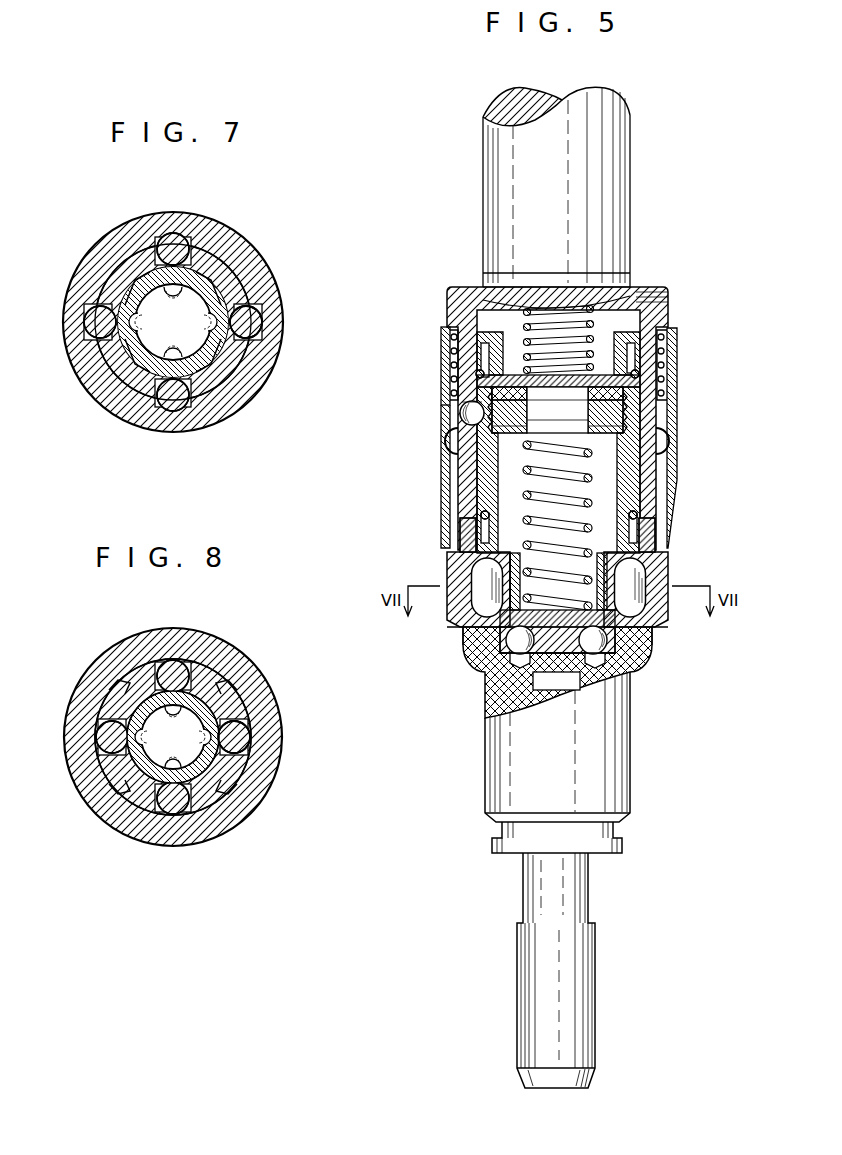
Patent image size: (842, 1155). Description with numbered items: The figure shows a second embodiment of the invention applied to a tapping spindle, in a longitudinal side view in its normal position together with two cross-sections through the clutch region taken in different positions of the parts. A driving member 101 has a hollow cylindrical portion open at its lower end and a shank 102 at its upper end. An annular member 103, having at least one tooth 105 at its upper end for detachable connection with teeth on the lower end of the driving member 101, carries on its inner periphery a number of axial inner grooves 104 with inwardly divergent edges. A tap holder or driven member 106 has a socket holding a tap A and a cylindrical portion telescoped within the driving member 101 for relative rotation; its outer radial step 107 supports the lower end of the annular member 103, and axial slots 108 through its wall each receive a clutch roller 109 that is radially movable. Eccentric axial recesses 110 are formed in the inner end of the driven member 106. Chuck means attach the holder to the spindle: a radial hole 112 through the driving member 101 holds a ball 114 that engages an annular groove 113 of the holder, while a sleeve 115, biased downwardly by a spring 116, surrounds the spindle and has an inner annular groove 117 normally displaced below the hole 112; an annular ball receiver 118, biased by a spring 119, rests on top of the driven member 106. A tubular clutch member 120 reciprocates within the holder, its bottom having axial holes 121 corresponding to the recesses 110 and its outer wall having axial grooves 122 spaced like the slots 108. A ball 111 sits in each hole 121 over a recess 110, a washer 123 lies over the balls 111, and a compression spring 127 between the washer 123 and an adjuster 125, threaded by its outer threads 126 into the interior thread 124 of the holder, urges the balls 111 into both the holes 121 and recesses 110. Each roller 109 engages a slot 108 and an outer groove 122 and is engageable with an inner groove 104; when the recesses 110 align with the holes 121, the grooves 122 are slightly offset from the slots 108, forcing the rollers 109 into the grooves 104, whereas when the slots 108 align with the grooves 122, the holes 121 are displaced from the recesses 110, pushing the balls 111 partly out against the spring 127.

In FIG. 5, the driving member 101 is at (645, 468).
In FIG. 5, the shank 102 is at (570, 233).
In FIG. 5, the annular member 103 is at (668, 580).
In FIG. 7, the annular member 103 is at (262, 270).
In FIG. 8, the annular member 103 is at (210, 643).
In FIG. 5, the axial inner grooves 104 is at (660, 626).
In FIG. 7, the axial inner grooves 104 is at (177, 405).
In FIG. 8, the axial inner grooves 104 is at (243, 667).
In FIG. 5, the tooth 105 is at (676, 516).
In FIG. 5, the driven member 106 is at (572, 779).
In FIG. 7, the driven member 106 is at (210, 380).
In FIG. 8, the driven member 106 is at (197, 810).
In FIG. 5, the outer radial step 107 is at (655, 648).
In FIG. 5, the axial slots 108 is at (670, 550).
In FIG. 7, the axial slots 108 is at (207, 247).
In FIG. 8, the axial slots 108 is at (217, 752).
In FIG. 5, the clutch roller 109 is at (470, 585).
In FIG. 7, the clutch roller 109 is at (250, 322).
In FIG. 8, the clutch roller 109 is at (250, 733).
In FIG. 5, the axial recesses 110 is at (497, 690).
In FIG. 5, the ball 111 is at (492, 670).
In FIG. 5, the radial hole 112 is at (458, 406).
In FIG. 5, the annular groove 113 is at (656, 400).
In FIG. 5, the ball 114 is at (462, 418).
In FIG. 5, the sleeve 115 is at (450, 496).
In FIG. 5, the spring 116 is at (444, 353).
In FIG. 5, the annular groove 117 is at (452, 444).
In FIG. 5, the annular ball receiver 118 is at (668, 325).
In FIG. 5, the spring 119 is at (668, 305).
In FIG. 5, the clutch member 120 is at (605, 702).
In FIG. 7, the clutch member 120 is at (223, 357).
In FIG. 8, the clutch member 120 is at (207, 765).
In FIG. 5, the axial holes 121 is at (495, 647).
In FIG. 7, the axial holes 121 is at (203, 277).
In FIG. 8, the axial holes 121 is at (182, 728).
In FIG. 5, the axial grooves 122 is at (472, 636).
In FIG. 7, the axial grooves 122 is at (223, 305).
In FIG. 5, the washer 123 is at (615, 672).
In FIG. 5, the interior thread 124 is at (672, 444).
In FIG. 5, the adjuster 125 is at (650, 416).
In FIG. 5, the outer threads 126 is at (558, 429).
In FIG. 5, the compression spring 127 is at (485, 520).
In FIG. 5, the tap A is at (598, 1013).